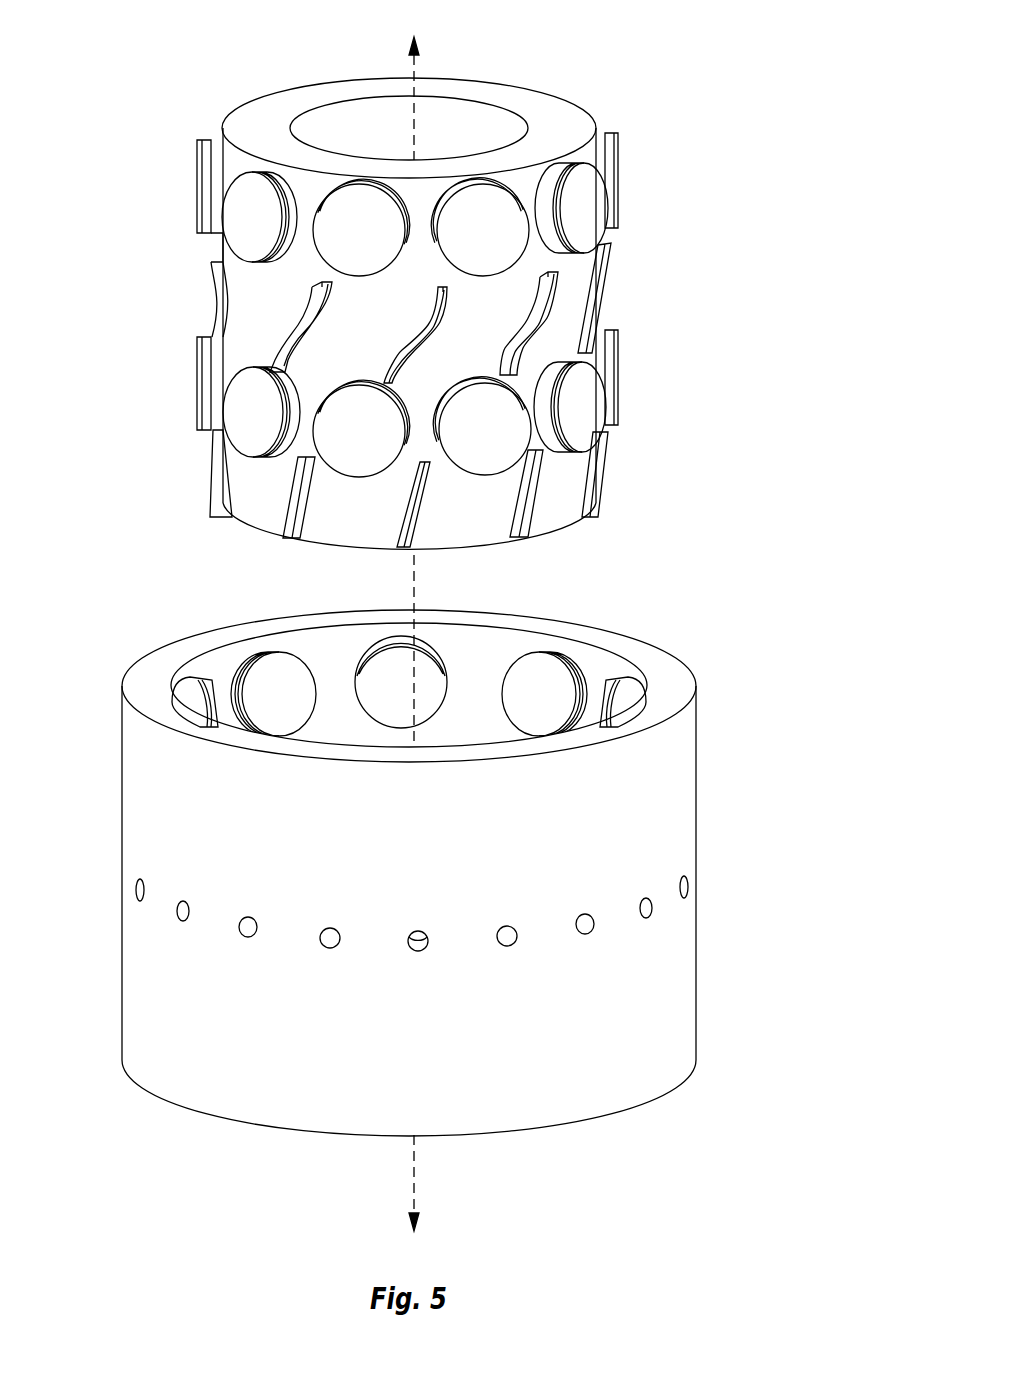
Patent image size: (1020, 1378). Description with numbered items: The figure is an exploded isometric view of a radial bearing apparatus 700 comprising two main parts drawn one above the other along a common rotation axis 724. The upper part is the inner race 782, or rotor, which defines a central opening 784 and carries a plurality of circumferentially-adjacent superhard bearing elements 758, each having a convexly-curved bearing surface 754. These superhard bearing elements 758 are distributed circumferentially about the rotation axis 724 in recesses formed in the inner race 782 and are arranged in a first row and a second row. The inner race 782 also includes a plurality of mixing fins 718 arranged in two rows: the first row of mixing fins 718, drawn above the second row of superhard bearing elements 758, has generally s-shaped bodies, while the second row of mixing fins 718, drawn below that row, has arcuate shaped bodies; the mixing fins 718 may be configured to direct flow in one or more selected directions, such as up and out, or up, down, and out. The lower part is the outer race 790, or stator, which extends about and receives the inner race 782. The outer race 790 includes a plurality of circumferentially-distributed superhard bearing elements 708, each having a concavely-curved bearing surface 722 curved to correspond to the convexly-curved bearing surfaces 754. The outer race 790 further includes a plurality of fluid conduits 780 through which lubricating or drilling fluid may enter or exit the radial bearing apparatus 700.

The radial bearing apparatus 700 is at (126, 376).
The superhard bearing element 708 is at (248, 653).
The mixing fin 718 is at (225, 477).
The concavely-curved bearing surface 722 is at (295, 682).
The rotation axis 724 is at (413, 633).
The convexly-curved bearing surface 754 is at (243, 222).
The superhard bearing element 758 is at (248, 198).
The fluid conduit 780 is at (652, 912).
The inner race 782 is at (555, 113).
The opening 784 is at (395, 139).
The outer race 790 is at (668, 675).